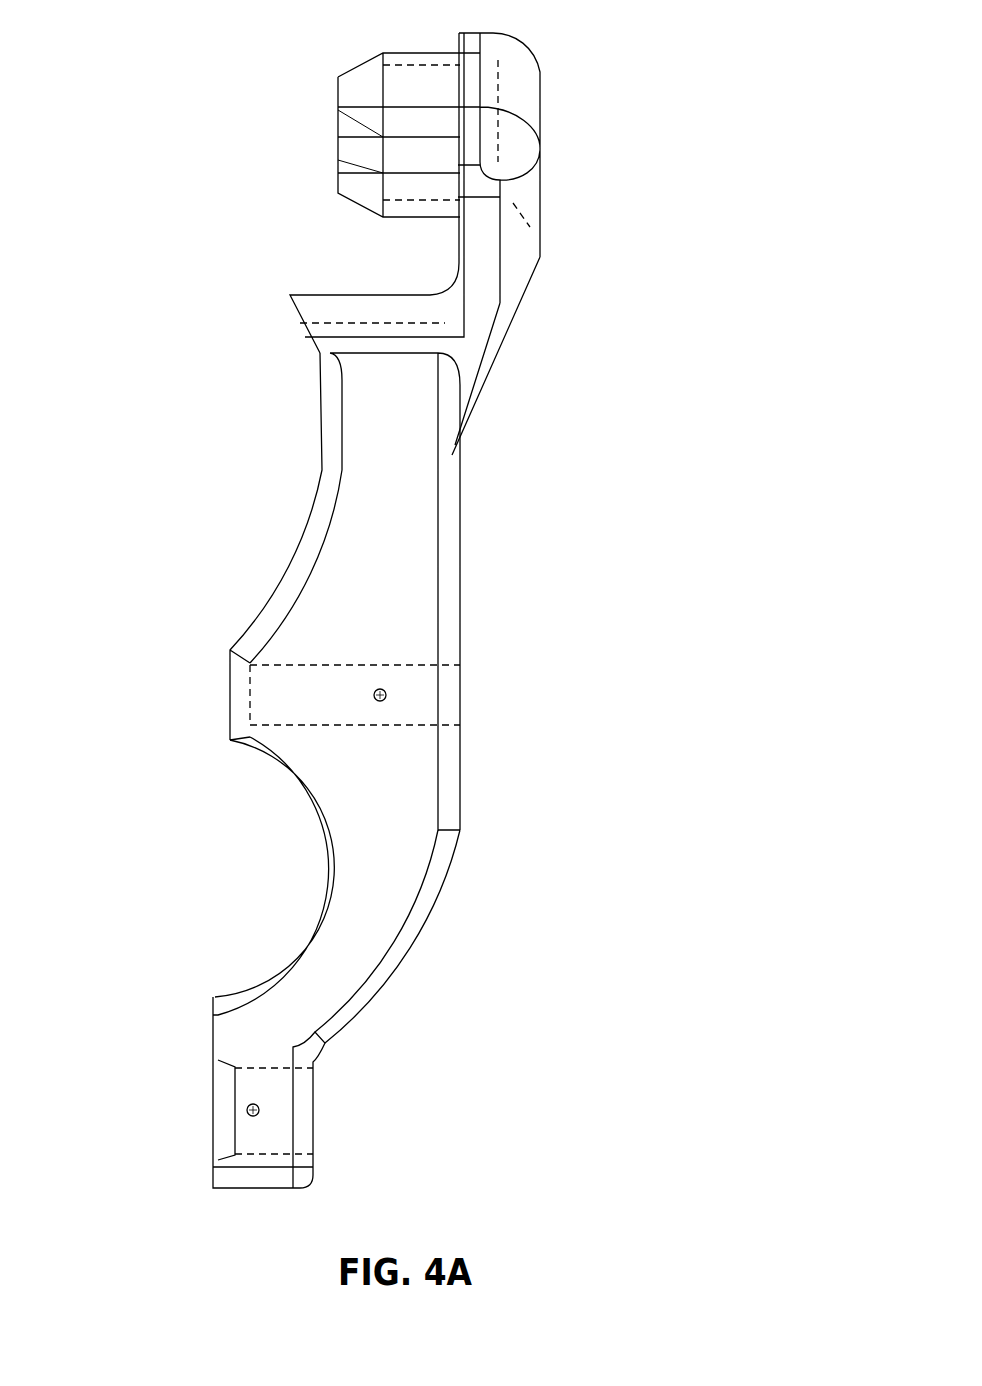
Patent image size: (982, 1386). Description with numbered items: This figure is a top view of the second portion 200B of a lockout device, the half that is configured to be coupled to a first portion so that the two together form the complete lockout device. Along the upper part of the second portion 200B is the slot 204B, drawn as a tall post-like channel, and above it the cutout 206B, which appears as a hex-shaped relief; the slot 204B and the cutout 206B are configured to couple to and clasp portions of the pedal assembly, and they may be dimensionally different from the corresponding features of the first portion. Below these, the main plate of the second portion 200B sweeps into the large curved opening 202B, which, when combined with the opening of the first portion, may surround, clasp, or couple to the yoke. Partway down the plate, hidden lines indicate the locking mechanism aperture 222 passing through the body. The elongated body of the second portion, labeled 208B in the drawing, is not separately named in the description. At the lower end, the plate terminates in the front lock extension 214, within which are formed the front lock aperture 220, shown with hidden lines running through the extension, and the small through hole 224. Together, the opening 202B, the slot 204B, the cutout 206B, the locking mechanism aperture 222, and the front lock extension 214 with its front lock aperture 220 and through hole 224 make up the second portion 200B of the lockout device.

The second portion 200B is at (347, 640).
The opening 202B is at (263, 890).
The slot 204B is at (423, 247).
The cutout 206B is at (438, 122).
The arm body 208B is at (390, 618).
The front lock extension 214 is at (222, 1122).
The front lock aperture 220 is at (282, 1157).
The locking mechanism aperture 222 is at (418, 728).
The through hole 224 is at (258, 1128).